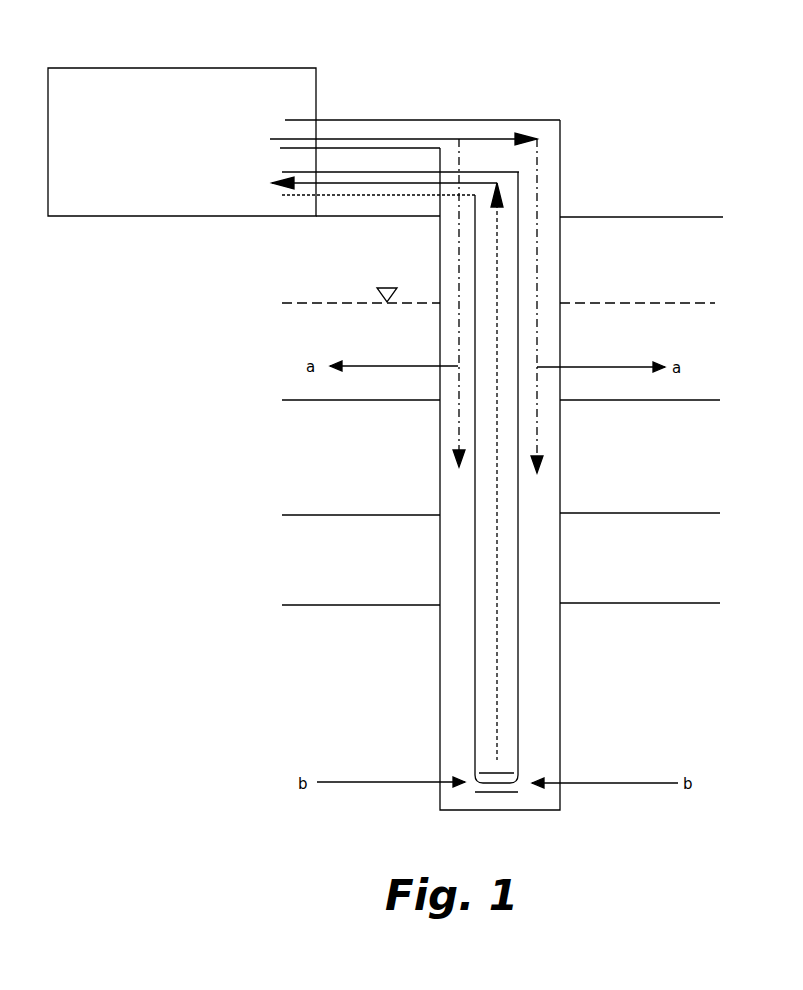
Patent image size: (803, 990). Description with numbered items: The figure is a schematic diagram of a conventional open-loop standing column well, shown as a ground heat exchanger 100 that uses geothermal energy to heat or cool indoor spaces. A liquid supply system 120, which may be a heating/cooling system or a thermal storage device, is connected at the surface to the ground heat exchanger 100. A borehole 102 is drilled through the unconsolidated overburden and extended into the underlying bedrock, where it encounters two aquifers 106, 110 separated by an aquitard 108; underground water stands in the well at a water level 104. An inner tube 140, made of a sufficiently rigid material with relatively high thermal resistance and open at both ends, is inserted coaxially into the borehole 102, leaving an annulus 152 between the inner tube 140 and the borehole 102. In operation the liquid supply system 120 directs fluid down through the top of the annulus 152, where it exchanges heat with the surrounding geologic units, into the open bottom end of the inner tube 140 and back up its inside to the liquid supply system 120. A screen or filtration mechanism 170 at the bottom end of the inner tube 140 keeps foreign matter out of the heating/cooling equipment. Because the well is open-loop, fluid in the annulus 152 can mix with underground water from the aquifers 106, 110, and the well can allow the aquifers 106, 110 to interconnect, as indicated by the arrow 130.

The ground heat exchanger 100 is at (512, 62).
The borehole 102 is at (560, 278).
The water level 104 is at (470, 300).
The aquifer 106 is at (501, 412).
The aquitard 108 is at (501, 542).
The aquifer 110 is at (501, 653).
The liquid supply system 120 is at (244, 142).
The arrow 130 is at (570, 640).
The inner tube 140 is at (477, 680).
The annulus 152 is at (453, 550).
The screen or filtration mechanism 170 is at (505, 792).